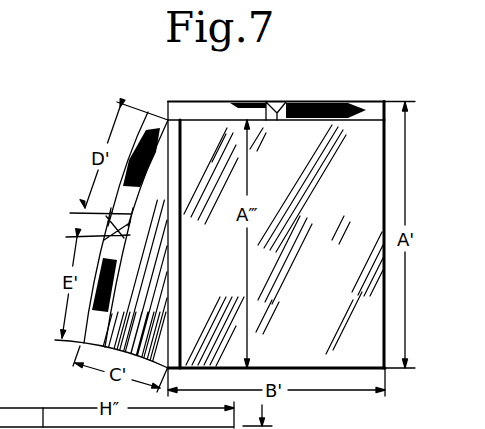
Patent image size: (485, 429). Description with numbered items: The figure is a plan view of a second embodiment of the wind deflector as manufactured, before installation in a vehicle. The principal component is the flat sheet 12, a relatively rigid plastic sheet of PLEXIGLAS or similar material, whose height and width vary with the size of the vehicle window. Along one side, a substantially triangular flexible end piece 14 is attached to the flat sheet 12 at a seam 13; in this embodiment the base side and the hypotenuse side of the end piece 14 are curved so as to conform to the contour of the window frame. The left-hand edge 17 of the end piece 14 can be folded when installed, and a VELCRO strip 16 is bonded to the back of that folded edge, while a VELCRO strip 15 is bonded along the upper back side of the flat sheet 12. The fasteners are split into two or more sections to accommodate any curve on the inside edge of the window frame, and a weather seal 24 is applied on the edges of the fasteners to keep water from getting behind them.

The flat sheet 12 is at (325, 231).
The seam 13 is at (186, 248).
The flexible end piece 14 is at (156, 283).
The VELCRO strip 15 is at (298, 101).
The VELCRO strip 16 is at (110, 226).
The left-hand edge 17 is at (92, 330).
The weather seal 24 is at (345, 102).